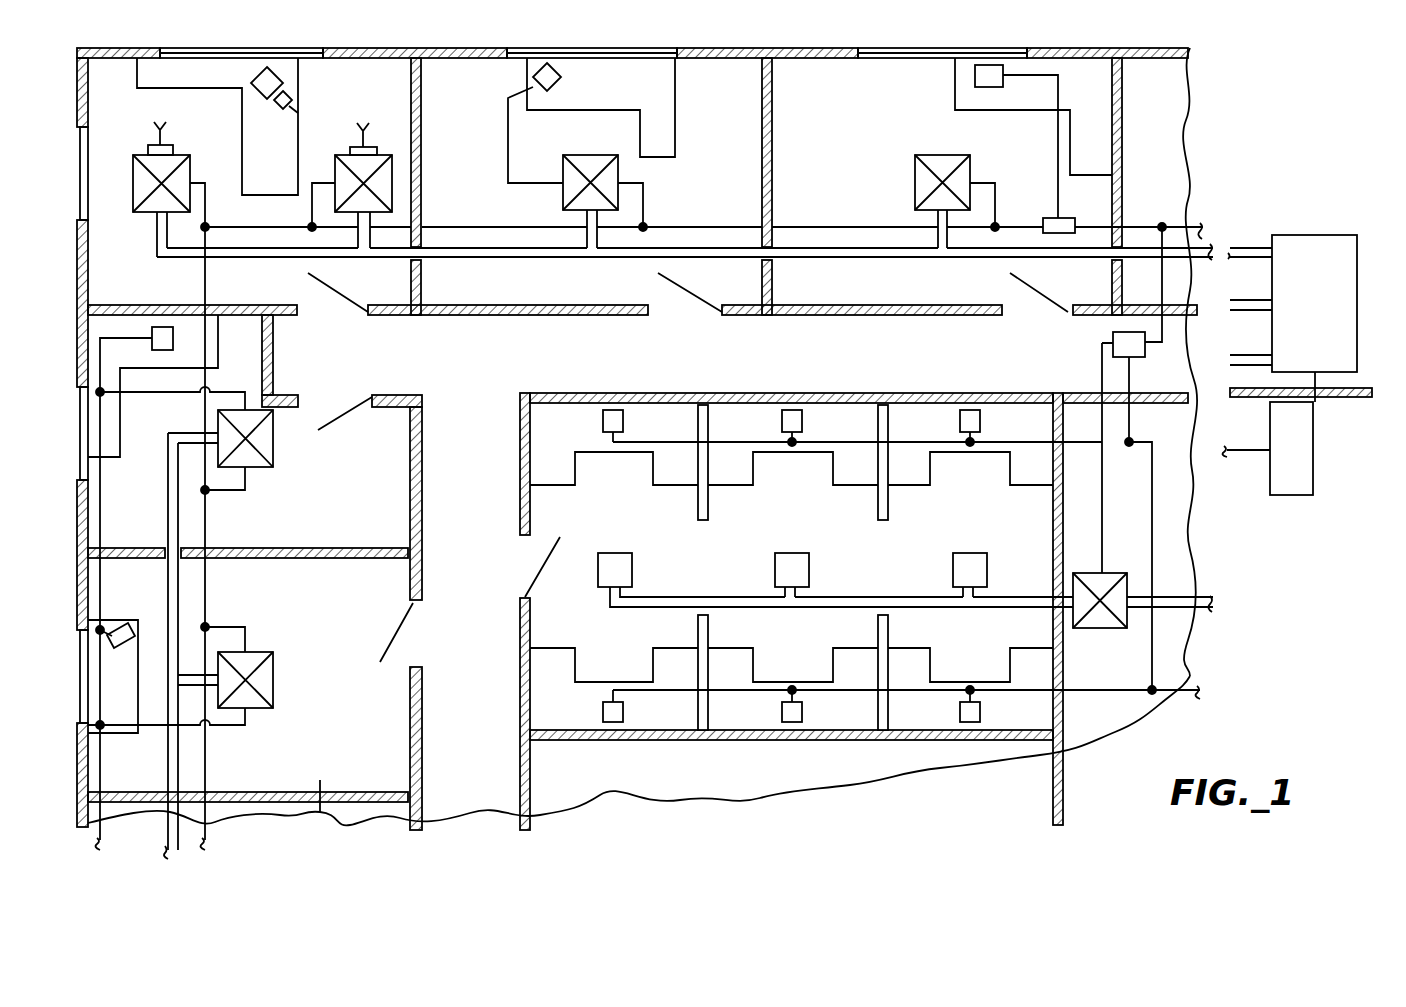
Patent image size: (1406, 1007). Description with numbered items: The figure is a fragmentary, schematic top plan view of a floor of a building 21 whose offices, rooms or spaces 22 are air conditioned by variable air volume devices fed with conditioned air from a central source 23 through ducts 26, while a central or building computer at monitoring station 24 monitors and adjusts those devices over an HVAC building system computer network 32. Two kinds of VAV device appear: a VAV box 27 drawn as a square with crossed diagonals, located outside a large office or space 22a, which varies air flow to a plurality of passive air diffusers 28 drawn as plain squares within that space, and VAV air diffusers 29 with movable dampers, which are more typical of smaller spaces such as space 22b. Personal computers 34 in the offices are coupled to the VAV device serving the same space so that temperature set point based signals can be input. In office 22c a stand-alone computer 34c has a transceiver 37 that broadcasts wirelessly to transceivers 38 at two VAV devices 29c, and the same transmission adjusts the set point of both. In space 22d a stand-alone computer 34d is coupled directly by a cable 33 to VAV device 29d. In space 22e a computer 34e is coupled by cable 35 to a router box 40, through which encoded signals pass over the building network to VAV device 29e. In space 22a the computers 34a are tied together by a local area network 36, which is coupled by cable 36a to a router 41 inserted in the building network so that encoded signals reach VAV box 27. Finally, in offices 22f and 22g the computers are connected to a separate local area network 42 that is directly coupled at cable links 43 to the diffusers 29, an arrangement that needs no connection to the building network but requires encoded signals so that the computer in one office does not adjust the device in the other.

The building 21 is at (632, 42).
The offices, rooms or spaces 22 is at (795, 67).
The large office or space 22a is at (572, 518).
The space 22b is at (322, 800).
The office 22c is at (105, 70).
The space 22d is at (472, 72).
The space 22e is at (830, 183).
The office 22f is at (369, 528).
The office 22g is at (365, 748).
The central source 23 is at (1321, 228).
The monitoring station 24 is at (1294, 504).
The ducts 26 is at (467, 258).
The VAV box 27 is at (1085, 628).
The passive air diffusers 28 is at (612, 553).
The VAV air diffusers 29 is at (273, 440).
The VAV devices 29c is at (133, 177).
The VAV device 29d is at (598, 155).
The VAV device 29e is at (938, 155).
The HVAC building system computer network 32 is at (685, 226).
The cable 33 is at (507, 140).
The personal computers 34 is at (160, 327).
The computers 34a is at (603, 420).
The computer 34c is at (273, 65).
The computer 34d is at (561, 78).
The computer 34e is at (975, 72).
The cable 35 is at (1057, 152).
The local area network 36 is at (140, 337).
The cable 36a is at (1130, 380).
The transmitter or transceiver 37 is at (292, 92).
The receivers or transceivers 38 is at (168, 134).
The router box 40 is at (1050, 218).
The router 41 is at (1112, 340).
The local area network 42 is at (100, 503).
The cable links 43 is at (130, 393).